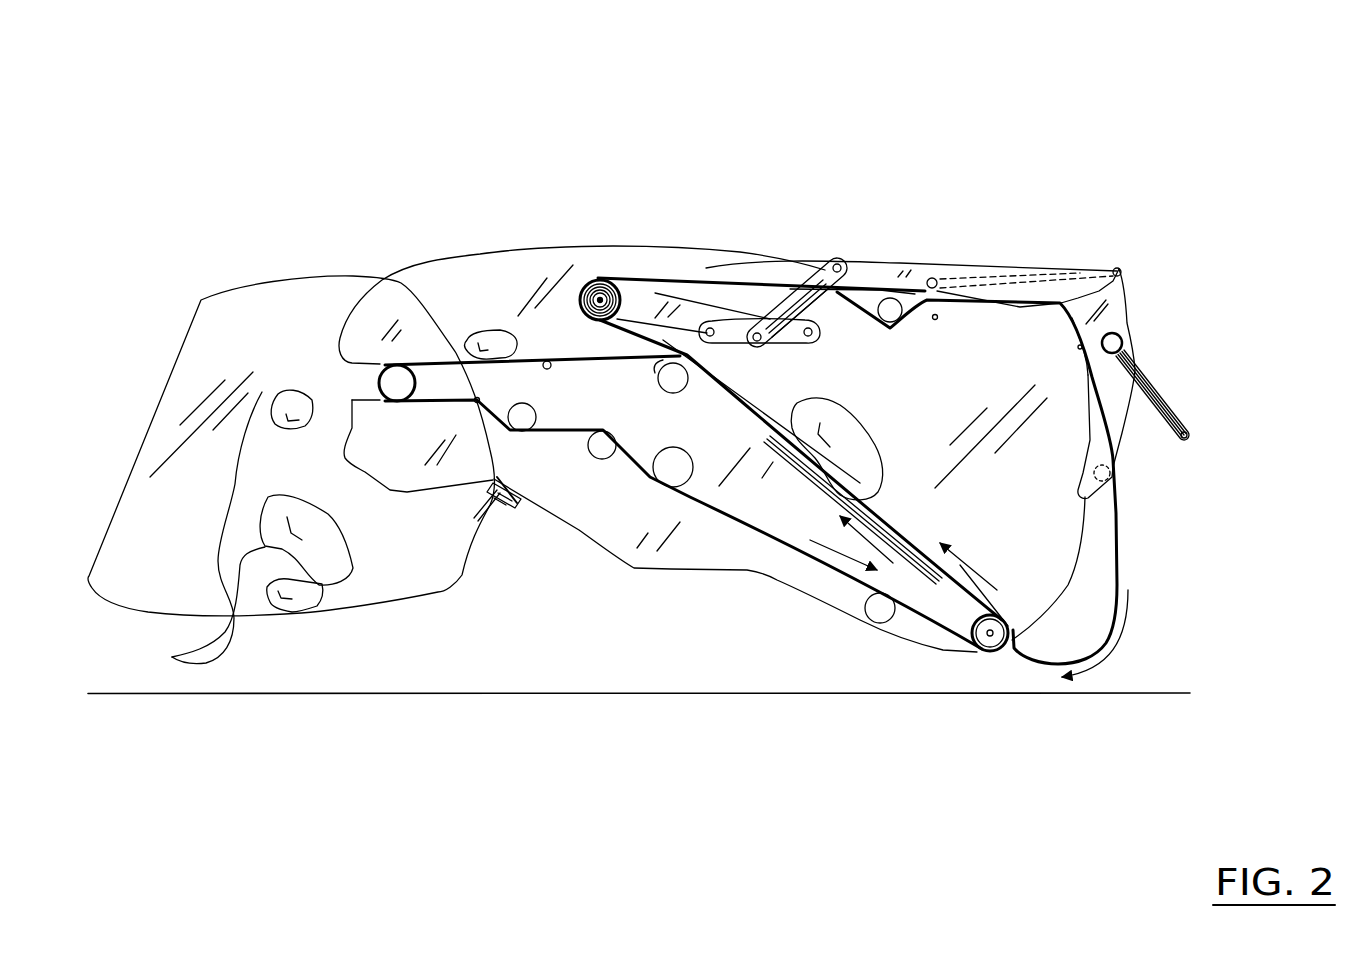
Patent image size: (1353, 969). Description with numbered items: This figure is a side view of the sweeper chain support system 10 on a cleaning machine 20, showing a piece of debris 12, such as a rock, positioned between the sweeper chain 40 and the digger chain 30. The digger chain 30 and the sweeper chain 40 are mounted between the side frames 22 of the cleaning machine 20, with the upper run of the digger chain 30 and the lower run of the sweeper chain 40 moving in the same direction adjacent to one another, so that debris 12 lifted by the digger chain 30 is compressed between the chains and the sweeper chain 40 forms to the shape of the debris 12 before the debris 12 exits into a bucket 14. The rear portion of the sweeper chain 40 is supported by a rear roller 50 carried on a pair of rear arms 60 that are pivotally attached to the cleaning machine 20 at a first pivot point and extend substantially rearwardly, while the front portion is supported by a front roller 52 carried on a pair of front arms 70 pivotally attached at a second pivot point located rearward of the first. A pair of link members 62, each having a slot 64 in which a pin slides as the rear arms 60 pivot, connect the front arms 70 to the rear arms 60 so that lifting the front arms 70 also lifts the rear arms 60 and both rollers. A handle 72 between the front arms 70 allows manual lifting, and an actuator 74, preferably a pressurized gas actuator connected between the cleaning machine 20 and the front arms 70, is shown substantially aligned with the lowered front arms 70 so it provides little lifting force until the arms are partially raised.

The sweeper chain support system 10 is at (345, 255).
The debris 12 is at (796, 470).
The bucket 14 is at (265, 310).
The cleaning machine 20 is at (525, 288).
The side frames 22 is at (576, 493).
The digger chain 30 is at (832, 572).
The sweeper chain 40 is at (1116, 569).
The rear roller 50 is at (593, 278).
The front roller 52 is at (1112, 477).
The rear arms 60 is at (687, 320).
The link members 62 is at (775, 318).
The slots 64 is at (790, 300).
The front arms 70 is at (903, 263).
The handle 72 is at (1188, 430).
The actuator 74 is at (1038, 271).